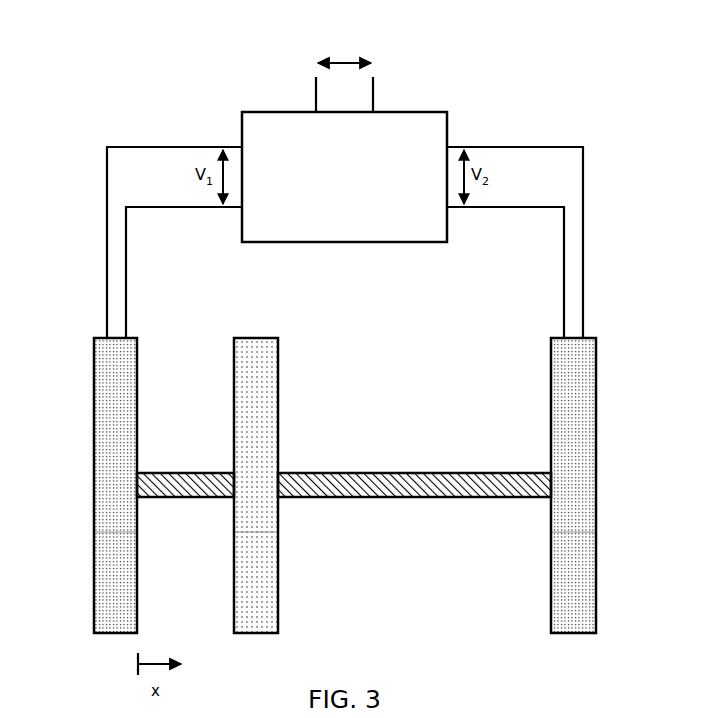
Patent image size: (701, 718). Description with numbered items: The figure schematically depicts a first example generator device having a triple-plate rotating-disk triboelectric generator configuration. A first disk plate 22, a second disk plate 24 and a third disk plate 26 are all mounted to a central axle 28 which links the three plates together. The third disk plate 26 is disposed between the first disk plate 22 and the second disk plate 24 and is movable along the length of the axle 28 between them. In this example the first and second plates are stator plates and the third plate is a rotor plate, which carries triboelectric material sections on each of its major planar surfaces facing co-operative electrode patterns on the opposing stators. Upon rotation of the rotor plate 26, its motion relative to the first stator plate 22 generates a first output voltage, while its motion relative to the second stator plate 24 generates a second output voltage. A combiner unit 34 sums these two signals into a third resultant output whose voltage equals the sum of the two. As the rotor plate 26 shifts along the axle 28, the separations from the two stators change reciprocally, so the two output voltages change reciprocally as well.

The first disk plate 22 is at (93, 370).
The second disk plate 24 is at (597, 362).
The third disk plate 26 is at (279, 362).
The central axle 28 is at (385, 498).
The combiner unit 34 is at (410, 112).